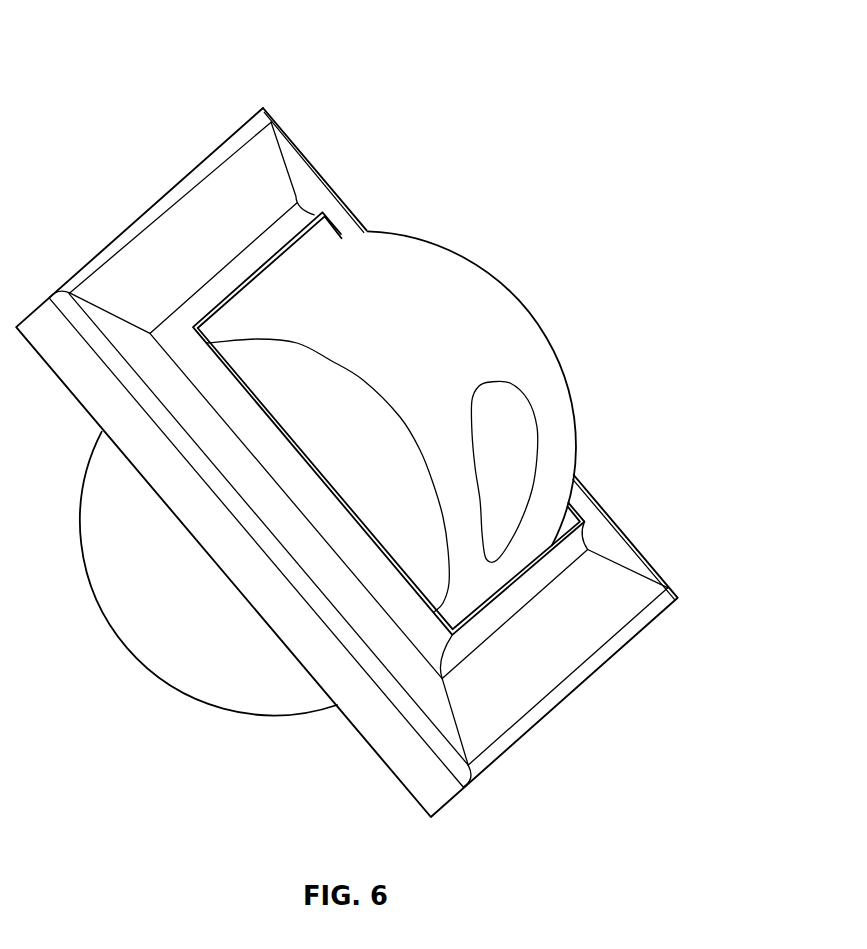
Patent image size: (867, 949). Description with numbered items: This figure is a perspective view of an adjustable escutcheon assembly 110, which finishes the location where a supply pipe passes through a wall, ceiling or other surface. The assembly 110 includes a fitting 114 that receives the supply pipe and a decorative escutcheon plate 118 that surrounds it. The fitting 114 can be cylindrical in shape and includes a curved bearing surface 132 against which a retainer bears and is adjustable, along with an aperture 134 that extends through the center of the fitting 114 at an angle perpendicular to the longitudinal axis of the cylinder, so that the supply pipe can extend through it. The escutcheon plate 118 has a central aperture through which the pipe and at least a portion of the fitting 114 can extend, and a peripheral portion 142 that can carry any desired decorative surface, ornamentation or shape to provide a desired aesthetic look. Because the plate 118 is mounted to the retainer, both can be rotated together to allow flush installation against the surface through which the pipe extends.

The adjustable escutcheon assembly 110 is at (410, 415).
The decorative escutcheon plate 118 is at (347, 435).
The fitting 114 is at (374, 447).
The curved bearing surface 132 is at (432, 283).
The aperture 134 is at (507, 453).
The peripheral portion 142 is at (603, 607).